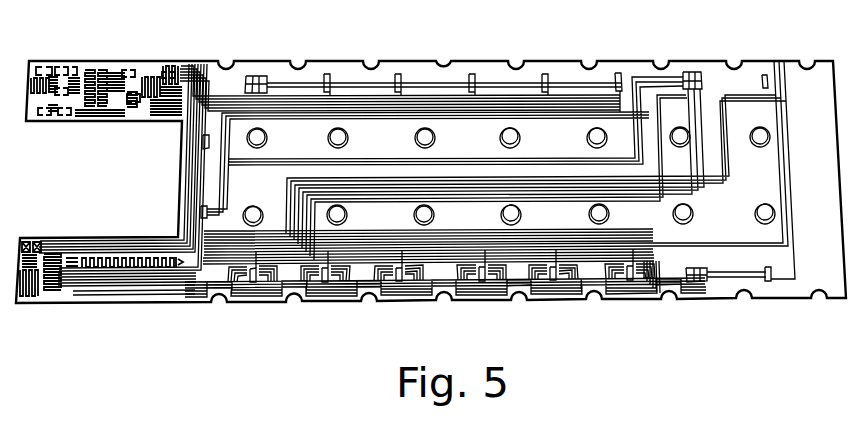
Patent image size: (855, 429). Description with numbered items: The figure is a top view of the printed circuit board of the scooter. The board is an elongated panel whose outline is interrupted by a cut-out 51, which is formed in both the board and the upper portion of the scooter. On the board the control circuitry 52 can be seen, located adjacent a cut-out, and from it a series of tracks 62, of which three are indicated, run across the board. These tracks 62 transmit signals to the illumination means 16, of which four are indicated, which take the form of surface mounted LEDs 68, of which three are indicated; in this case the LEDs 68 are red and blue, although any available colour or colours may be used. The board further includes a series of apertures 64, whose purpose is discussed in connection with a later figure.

The illumination means 16 is at (202, 142).
The cut-out 51 is at (113, 188).
The control circuitry 52 is at (58, 283).
The tracks 62 is at (437, 232).
The apertures 64 is at (252, 221).
The surface mounted LEDs 68 is at (620, 73).